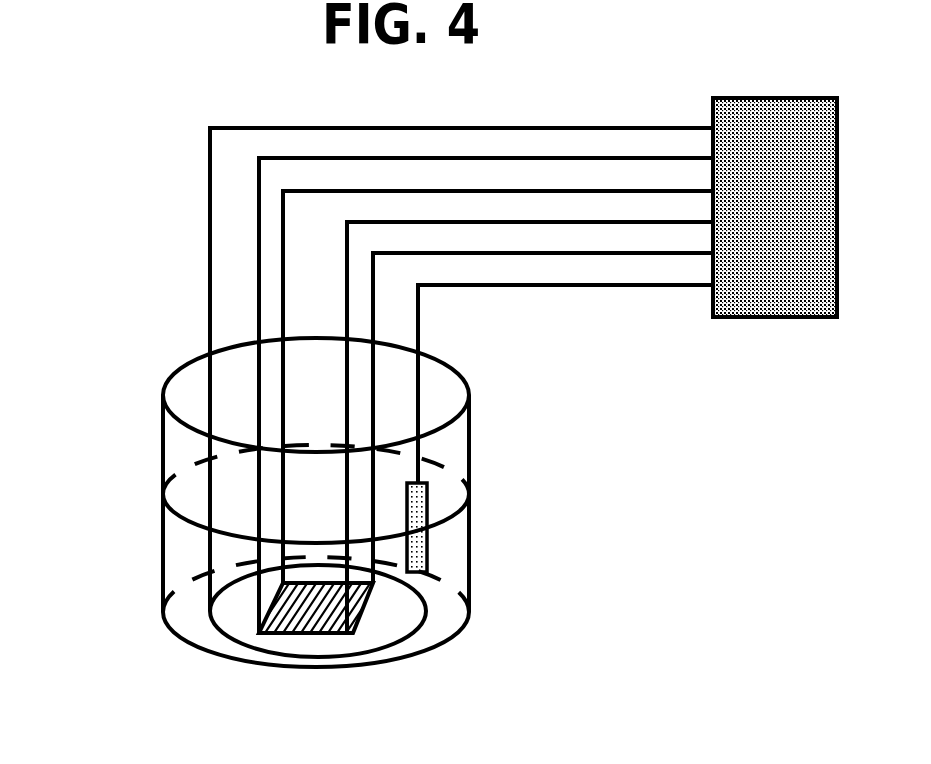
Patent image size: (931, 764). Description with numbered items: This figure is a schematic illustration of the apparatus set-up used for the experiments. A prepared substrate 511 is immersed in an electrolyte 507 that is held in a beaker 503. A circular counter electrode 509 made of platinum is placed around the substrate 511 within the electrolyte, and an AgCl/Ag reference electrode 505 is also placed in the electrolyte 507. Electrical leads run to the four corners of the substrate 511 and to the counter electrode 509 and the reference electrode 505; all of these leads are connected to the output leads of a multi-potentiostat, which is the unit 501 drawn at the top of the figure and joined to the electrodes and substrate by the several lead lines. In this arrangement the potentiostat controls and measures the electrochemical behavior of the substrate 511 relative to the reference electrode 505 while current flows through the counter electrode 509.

The controller 501 is at (523, 365).
The beaker 503 is at (146, 433).
The reference electrode 505 is at (447, 499).
The electrolyte 507 is at (478, 545).
The counter electrode 509 is at (443, 625).
The substrate 511 is at (338, 651).